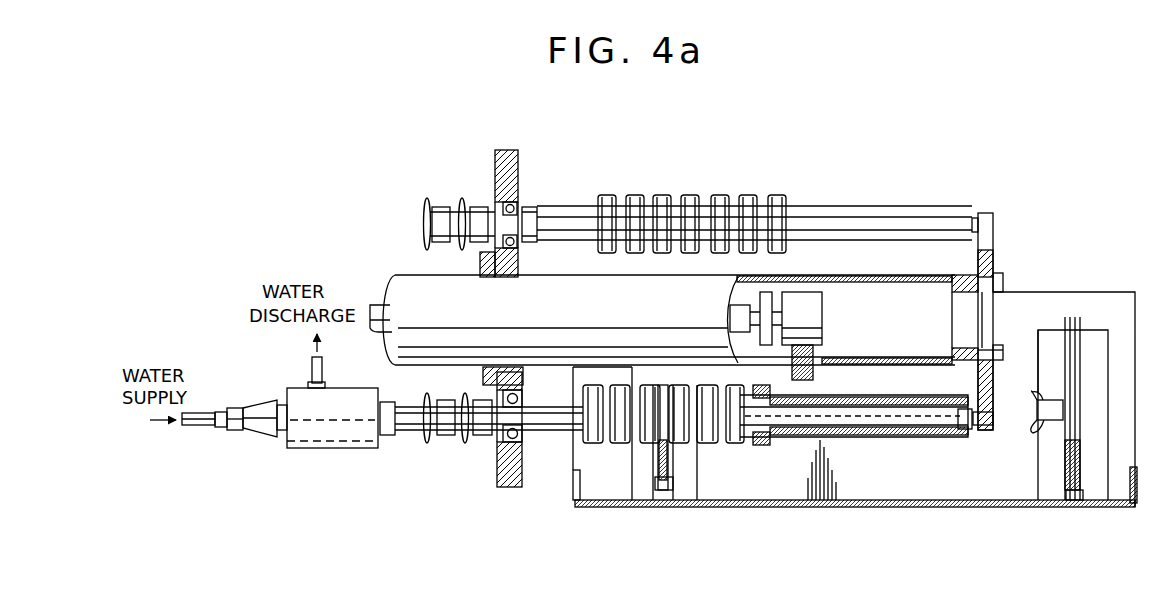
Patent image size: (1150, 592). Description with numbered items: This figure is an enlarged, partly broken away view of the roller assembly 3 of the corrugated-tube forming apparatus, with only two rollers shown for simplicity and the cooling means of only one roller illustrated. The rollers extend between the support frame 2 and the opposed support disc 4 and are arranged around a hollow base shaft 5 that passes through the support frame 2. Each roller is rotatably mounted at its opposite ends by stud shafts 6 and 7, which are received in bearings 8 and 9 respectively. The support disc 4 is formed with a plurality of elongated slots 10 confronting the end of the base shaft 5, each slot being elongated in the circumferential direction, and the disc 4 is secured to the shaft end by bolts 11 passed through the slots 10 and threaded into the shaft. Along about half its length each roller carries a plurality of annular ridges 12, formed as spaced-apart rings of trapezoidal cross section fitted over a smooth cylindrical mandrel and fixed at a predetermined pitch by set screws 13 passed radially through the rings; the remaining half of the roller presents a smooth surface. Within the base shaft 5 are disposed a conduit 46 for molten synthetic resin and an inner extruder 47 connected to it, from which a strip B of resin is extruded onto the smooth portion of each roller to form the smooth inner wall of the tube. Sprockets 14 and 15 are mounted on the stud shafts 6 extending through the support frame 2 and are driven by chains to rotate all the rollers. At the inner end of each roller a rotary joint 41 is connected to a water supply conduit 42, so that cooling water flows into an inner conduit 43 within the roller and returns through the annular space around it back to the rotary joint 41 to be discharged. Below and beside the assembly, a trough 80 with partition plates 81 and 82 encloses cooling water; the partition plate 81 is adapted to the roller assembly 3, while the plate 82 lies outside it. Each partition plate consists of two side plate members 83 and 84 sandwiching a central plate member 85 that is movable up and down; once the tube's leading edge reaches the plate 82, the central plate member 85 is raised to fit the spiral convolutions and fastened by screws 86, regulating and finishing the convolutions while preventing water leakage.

The support frame 2 is at (515, 488).
The roller assembly 3 is at (684, 190).
The support disc 4 is at (995, 240).
The hollow base shaft 5 is at (620, 311).
The stud shaft 6 is at (518, 248).
The stud shaft 7 is at (975, 214).
The bearing 8 is at (517, 205).
The bearing 9 is at (968, 430).
The elongated slots 10 is at (995, 357).
The bolts 11 is at (1004, 283).
The annular ridges 12 is at (776, 194).
The set screws 13 is at (743, 447).
The sprockets 14 is at (427, 198).
The sprockets 15 is at (463, 198).
The rotary joint 41 is at (340, 448).
The water supply conduit 42 is at (200, 427).
The inner conduit 43 is at (860, 426).
The conduit 46 is at (376, 304).
The inner extruder 47 is at (822, 338).
The trough 80 is at (835, 508).
The partition plate 81 is at (645, 452).
The partition plate 82 is at (1052, 454).
The side plate member 83 is at (660, 470).
The side plate member 84 is at (690, 480).
The central plate member 85 is at (661, 492).
The screws 86 is at (1035, 420).
The strip of synthetic resin material B is at (813, 372).